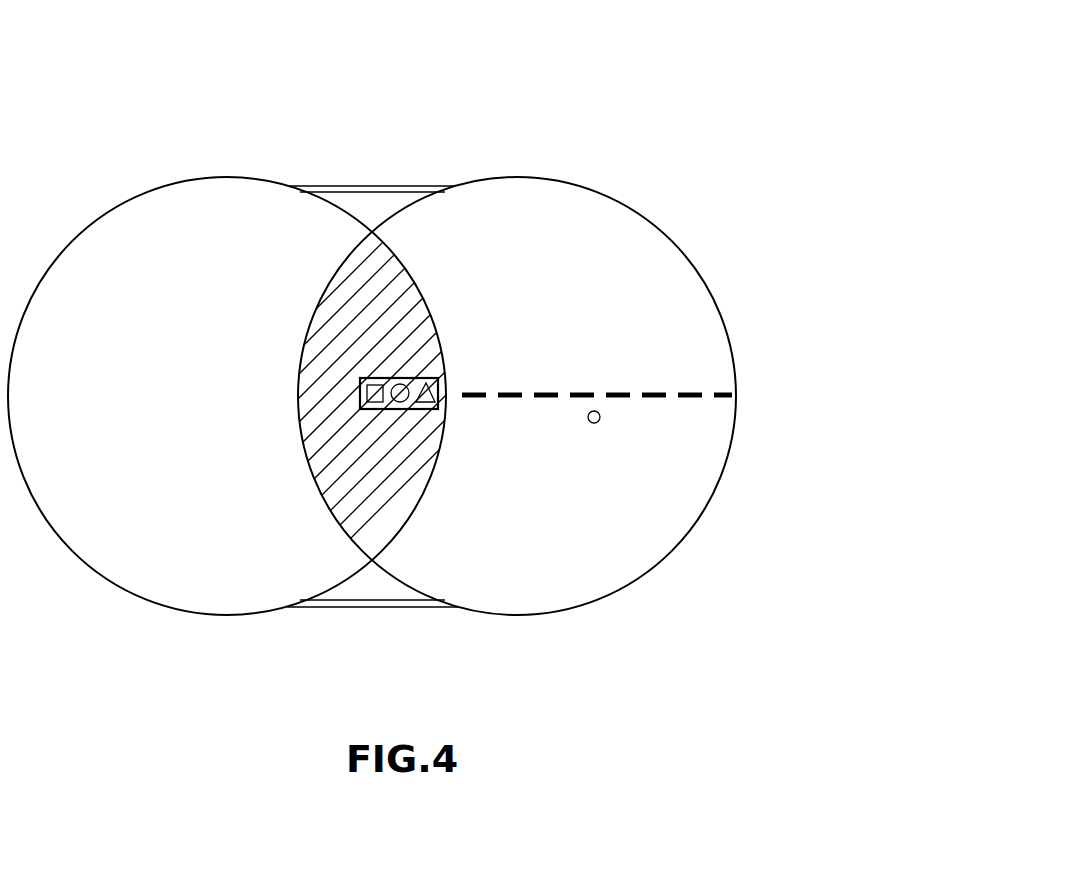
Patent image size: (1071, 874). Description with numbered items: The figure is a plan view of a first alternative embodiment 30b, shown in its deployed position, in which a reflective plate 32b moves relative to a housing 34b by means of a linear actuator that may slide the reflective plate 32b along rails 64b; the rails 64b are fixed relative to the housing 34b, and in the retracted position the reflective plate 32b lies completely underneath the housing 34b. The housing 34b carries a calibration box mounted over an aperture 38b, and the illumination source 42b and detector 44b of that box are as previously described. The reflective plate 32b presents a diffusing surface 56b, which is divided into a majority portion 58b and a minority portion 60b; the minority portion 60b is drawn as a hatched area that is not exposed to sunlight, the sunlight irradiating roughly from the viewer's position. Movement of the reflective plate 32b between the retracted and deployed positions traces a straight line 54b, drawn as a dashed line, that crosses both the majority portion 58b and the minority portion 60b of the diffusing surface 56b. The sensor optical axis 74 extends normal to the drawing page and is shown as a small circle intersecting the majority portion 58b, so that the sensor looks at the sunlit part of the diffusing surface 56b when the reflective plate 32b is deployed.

The first alternative embodiment 30b is at (710, 65).
The reflective plate 32b is at (565, 587).
The housing 34b is at (185, 198).
The aperture 38b is at (350, 448).
The illumination source 42b is at (375, 393).
The detector 44b is at (440, 375).
The straight line 54b is at (687, 392).
The diffusing surface 56b is at (690, 499).
The majority portion 58b is at (664, 277).
The minority portion 60b is at (390, 260).
The rails 64b is at (359, 186).
The sensor optical axis 74 is at (592, 420).